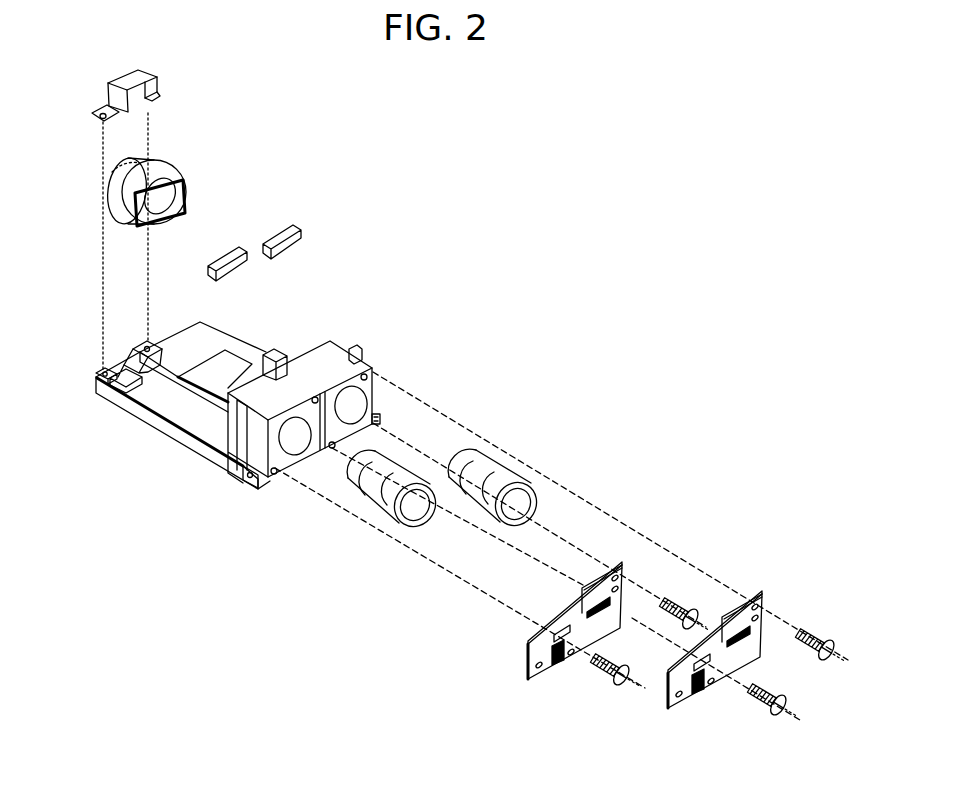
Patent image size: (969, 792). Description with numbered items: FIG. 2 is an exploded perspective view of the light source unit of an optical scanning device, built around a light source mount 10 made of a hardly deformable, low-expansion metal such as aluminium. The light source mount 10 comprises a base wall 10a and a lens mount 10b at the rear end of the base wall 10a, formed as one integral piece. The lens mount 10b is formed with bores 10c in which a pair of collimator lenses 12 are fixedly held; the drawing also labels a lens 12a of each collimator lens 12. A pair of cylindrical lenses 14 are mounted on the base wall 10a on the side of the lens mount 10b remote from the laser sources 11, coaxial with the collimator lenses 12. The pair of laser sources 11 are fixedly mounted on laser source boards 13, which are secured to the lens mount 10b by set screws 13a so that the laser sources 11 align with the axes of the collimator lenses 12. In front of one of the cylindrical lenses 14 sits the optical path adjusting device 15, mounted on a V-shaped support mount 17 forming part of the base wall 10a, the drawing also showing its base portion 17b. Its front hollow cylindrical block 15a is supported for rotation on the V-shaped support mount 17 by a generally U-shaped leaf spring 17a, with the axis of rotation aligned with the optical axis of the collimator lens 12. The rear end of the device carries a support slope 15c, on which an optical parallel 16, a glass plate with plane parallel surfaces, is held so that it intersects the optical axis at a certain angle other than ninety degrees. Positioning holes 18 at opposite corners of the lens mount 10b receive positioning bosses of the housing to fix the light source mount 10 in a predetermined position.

The light source mount 10 is at (266, 410).
The base wall 10a is at (212, 330).
The lens mount 10b is at (323, 412).
The bores 10c is at (352, 410).
The laser sources 11 is at (582, 606).
The collimator lenses 12 is at (448, 488).
The lens 12a is at (527, 469).
The laser source boards 13 is at (641, 632).
The set screws 13a is at (672, 598).
The cylindrical lenses 14 is at (303, 230).
The optical path adjusting device 15 is at (155, 193).
The front hollow cylindrical block 15a is at (110, 184).
The support slope 15c is at (188, 190).
The optical parallel 16 is at (152, 222).
The V-shaped support mount 17 is at (112, 378).
The U-shaped leaf spring 17a is at (135, 72).
The base portion of holding member 17b is at (133, 386).
The positioning holes 18 is at (232, 480).